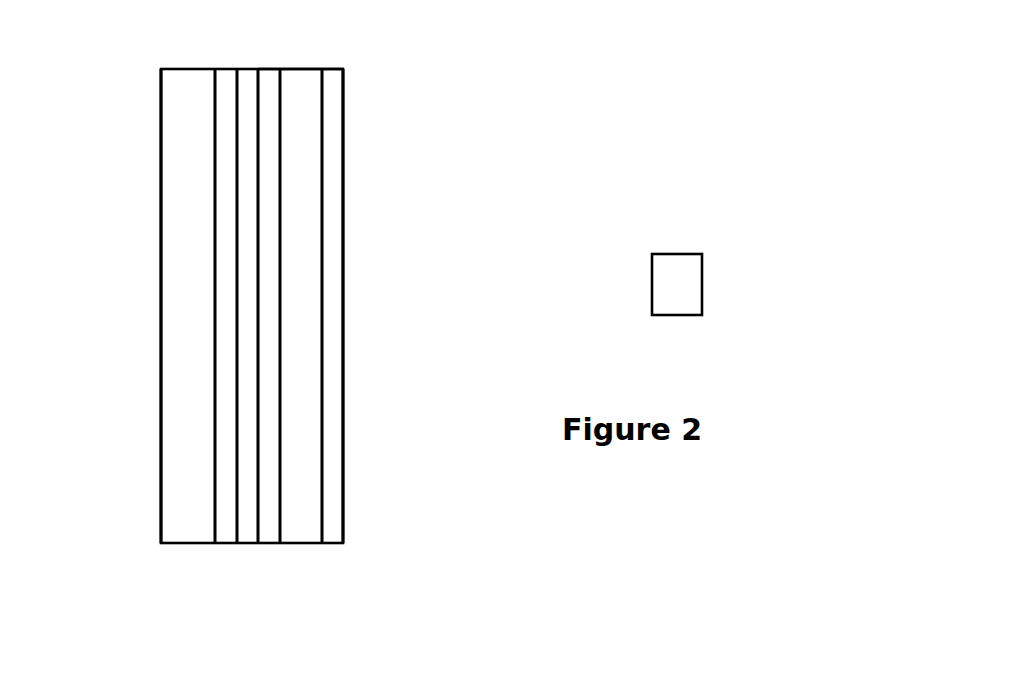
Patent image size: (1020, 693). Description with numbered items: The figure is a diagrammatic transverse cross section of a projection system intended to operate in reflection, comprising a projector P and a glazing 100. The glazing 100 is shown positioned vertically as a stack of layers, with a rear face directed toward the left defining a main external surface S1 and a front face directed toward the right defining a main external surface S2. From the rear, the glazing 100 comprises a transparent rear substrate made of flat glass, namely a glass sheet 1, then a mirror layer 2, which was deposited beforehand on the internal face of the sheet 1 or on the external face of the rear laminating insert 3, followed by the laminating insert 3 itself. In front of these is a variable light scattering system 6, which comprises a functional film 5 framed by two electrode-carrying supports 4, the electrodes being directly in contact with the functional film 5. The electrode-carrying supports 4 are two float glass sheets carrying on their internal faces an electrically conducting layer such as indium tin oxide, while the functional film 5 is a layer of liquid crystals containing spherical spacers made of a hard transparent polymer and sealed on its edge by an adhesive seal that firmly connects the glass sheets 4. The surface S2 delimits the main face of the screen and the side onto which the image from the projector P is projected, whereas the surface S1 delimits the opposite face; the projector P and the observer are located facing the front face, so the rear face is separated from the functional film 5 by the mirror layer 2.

The glazing 100 is at (137, 124).
The glass sheet 1 is at (188, 548).
The mirror layer 2 is at (222, 548).
The laminating insert 3 is at (248, 548).
The electrode-carrying supports 4 is at (272, 548).
The functional film 5 is at (303, 548).
The variable light scattering system 6 is at (343, 67).
The main external surface S1 is at (150, 294).
The main external surface S2 is at (362, 295).
The projector P is at (677, 284).